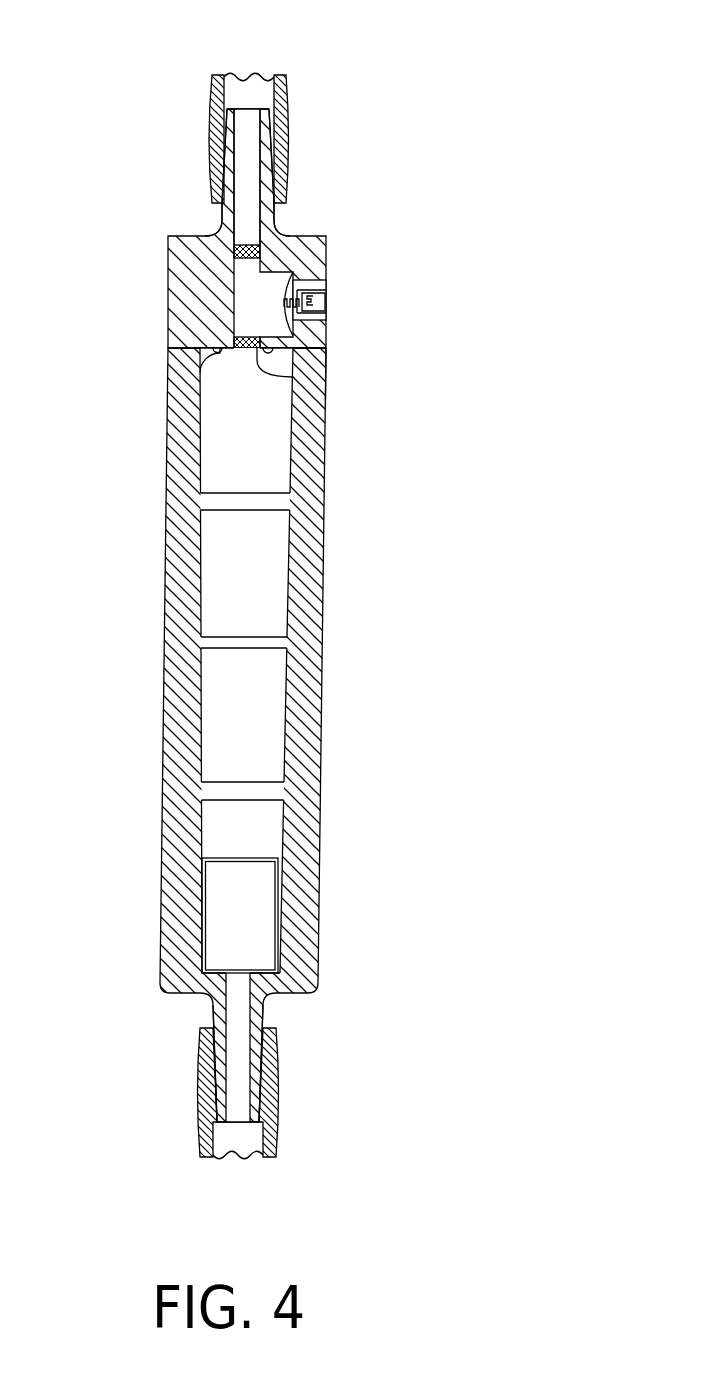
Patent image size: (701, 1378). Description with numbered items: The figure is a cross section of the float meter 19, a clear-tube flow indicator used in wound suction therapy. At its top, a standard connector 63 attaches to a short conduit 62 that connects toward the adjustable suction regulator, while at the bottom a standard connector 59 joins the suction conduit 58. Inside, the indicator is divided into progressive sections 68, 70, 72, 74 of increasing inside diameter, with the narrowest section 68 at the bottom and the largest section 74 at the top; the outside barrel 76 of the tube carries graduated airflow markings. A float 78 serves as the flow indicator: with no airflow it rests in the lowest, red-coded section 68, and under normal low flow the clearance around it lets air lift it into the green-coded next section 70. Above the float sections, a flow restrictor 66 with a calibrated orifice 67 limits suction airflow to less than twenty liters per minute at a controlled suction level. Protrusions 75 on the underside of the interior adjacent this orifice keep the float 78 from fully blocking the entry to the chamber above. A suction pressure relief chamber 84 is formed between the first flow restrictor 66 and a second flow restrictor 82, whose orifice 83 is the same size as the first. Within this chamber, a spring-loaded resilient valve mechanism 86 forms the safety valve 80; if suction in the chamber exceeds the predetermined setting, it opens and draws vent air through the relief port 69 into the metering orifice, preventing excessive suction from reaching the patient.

The float meter 19 is at (273, 598).
The suction conduit 58 is at (198, 1077).
The standard connector 59 is at (253, 1012).
The short conduit 62 is at (288, 125).
The standard connector 63 is at (247, 133).
The flow restrictor 66 is at (325, 377).
The orifice 67 is at (247, 325).
The narrowest section 68 is at (240, 818).
The relief port 69 is at (316, 282).
The next section 70 is at (240, 712).
The section 72 is at (232, 562).
The section 74 is at (240, 407).
The protrusions 75 is at (207, 375).
The outside barrel 76 is at (322, 737).
The float 78 is at (240, 898).
The safety valve 80 is at (348, 309).
The second flow restrictor 82 is at (272, 215).
The orifice 83 is at (232, 218).
The suction pressure relief chamber 84 is at (245, 290).
The resilient valve mechanism 86 is at (283, 290).